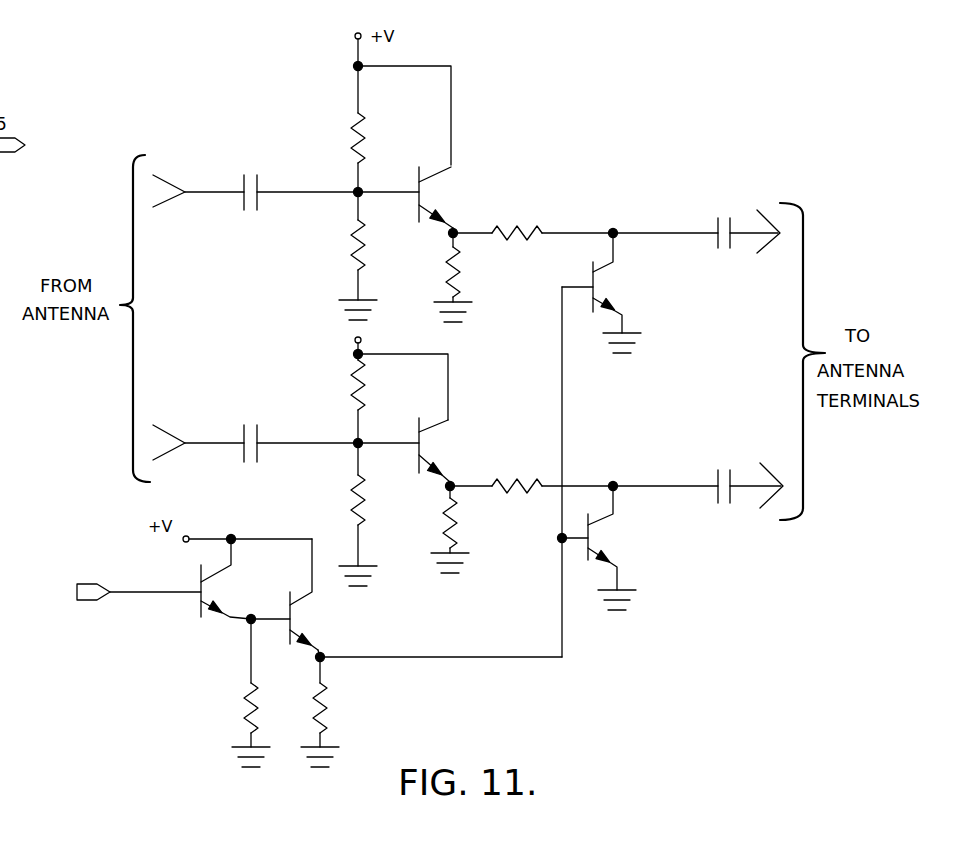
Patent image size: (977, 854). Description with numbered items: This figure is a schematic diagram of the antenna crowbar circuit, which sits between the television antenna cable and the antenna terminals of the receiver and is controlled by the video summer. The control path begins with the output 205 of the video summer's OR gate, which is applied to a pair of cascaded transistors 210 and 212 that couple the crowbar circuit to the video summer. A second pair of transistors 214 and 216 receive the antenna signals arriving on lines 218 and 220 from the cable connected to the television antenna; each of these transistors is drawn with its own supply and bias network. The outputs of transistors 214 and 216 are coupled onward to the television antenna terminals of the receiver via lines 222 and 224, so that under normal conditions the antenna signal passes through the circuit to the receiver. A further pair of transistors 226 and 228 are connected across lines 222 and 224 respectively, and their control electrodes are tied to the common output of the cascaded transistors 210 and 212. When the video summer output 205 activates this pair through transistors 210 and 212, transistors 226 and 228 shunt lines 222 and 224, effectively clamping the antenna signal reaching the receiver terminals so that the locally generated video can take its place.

The output 205 is at (133, 592).
The cascaded transistor 210 is at (208, 596).
The cascaded transistor 212 is at (293, 627).
The transistor 214 is at (437, 184).
The transistor 216 is at (428, 452).
The line 218 is at (197, 192).
The line 220 is at (195, 443).
The line 222 is at (742, 232).
The line 224 is at (745, 484).
The shunt transistor 226 is at (600, 294).
The shunt transistor 228 is at (597, 545).